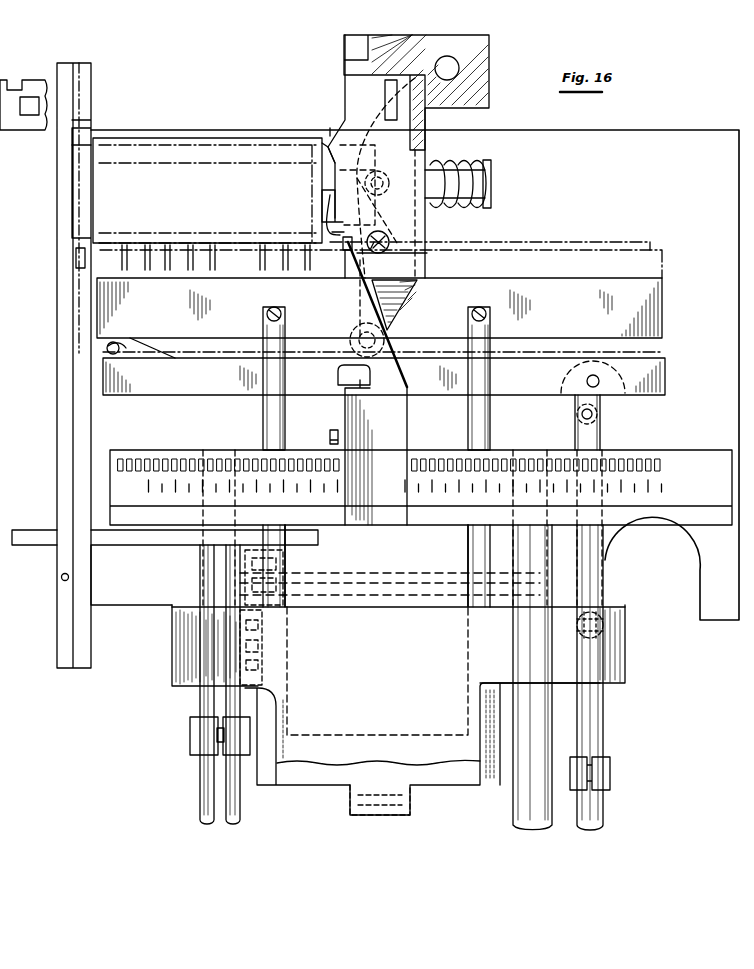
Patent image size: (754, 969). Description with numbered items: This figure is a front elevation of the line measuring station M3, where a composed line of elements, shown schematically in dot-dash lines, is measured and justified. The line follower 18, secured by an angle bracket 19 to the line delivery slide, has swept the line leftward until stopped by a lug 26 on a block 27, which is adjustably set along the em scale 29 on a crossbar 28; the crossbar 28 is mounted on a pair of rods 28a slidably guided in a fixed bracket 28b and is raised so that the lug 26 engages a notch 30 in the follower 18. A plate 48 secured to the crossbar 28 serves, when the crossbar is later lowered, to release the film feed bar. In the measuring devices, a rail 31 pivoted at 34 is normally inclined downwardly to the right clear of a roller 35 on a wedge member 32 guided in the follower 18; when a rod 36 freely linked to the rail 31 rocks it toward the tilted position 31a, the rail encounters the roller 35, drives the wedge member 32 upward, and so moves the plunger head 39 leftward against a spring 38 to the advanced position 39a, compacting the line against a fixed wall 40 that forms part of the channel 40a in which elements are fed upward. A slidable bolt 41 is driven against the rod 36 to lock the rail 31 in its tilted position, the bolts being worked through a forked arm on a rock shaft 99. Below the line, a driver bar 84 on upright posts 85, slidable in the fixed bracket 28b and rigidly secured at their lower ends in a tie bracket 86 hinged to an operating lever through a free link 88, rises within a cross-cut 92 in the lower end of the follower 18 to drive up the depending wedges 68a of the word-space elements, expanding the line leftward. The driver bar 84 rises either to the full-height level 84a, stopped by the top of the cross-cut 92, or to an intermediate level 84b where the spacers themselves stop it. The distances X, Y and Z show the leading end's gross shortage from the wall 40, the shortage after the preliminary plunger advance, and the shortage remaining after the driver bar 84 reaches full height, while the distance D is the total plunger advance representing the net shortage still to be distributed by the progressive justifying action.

The angle bracket 19 is at (468, 47).
The fixed wall 40 is at (76, 128).
The channel 40a is at (70, 145).
The distance Z is at (90, 181).
The distance Y is at (96, 201).
The distance X is at (100, 221).
The line measuring station M3 is at (207, 204).
The depending wedges 68a is at (214, 260).
The distance D is at (300, 188).
The full-height level of driver bar 84a is at (650, 240).
The intermediate level of driver bar 84b is at (659, 249).
The line follower 18 is at (406, 216).
The cross-cut 92 is at (416, 238).
The advanced plunger position 39a is at (332, 148).
The plunger head 39 is at (323, 210).
The spring 38 is at (447, 167).
The notch 30 is at (347, 237).
The lug 26 is at (334, 271).
The wedge member 32 is at (400, 305).
The roller 35 is at (354, 340).
The driver bar 84 is at (657, 296).
The tilted rail position 31a is at (662, 352).
The pivot 34 is at (114, 354).
The rail 31 is at (663, 373).
The block 27 is at (406, 415).
The upright posts 85 is at (264, 422).
The crossbar 28 is at (704, 450).
The em scale 29 is at (651, 482).
The plate 48 is at (132, 540).
The rock shaft 99 is at (417, 582).
The fixed bracket 28b is at (176, 658).
The slidable bolt 41 is at (605, 628).
The rods 28a is at (204, 782).
The rod 36 is at (590, 718).
The tie bracket 86 is at (454, 775).
The free link 88 is at (410, 794).